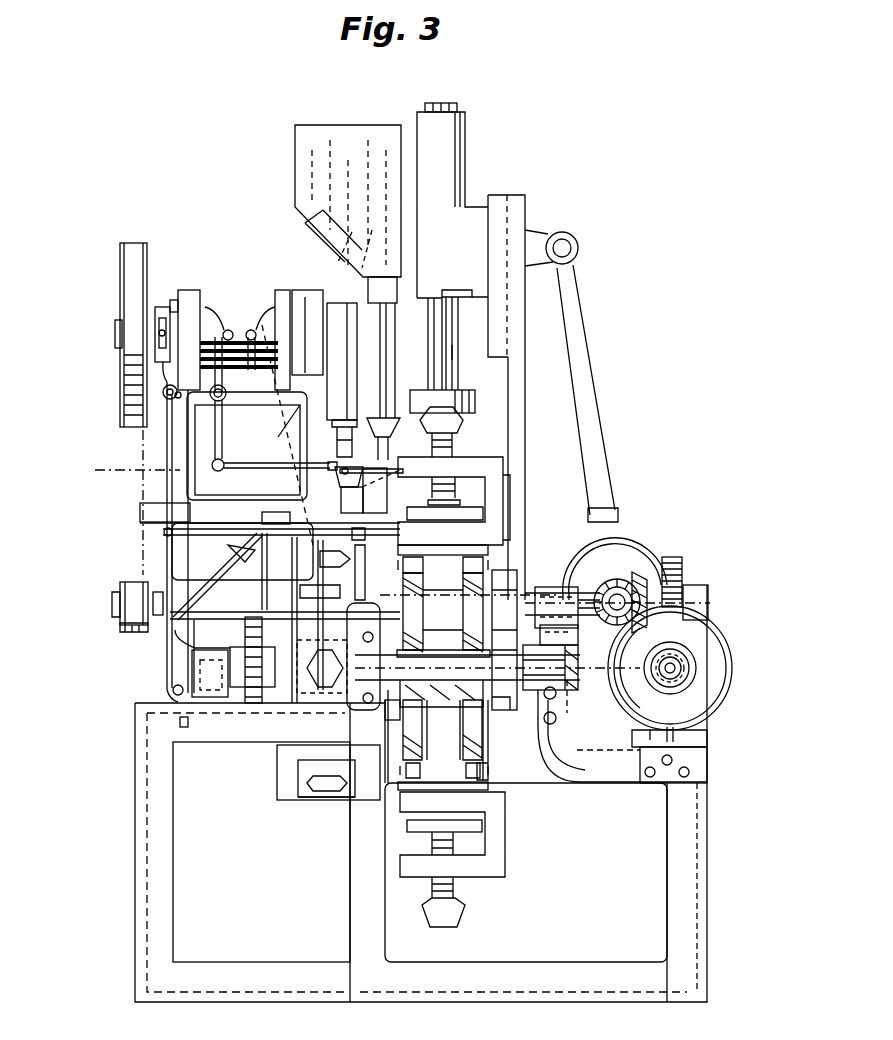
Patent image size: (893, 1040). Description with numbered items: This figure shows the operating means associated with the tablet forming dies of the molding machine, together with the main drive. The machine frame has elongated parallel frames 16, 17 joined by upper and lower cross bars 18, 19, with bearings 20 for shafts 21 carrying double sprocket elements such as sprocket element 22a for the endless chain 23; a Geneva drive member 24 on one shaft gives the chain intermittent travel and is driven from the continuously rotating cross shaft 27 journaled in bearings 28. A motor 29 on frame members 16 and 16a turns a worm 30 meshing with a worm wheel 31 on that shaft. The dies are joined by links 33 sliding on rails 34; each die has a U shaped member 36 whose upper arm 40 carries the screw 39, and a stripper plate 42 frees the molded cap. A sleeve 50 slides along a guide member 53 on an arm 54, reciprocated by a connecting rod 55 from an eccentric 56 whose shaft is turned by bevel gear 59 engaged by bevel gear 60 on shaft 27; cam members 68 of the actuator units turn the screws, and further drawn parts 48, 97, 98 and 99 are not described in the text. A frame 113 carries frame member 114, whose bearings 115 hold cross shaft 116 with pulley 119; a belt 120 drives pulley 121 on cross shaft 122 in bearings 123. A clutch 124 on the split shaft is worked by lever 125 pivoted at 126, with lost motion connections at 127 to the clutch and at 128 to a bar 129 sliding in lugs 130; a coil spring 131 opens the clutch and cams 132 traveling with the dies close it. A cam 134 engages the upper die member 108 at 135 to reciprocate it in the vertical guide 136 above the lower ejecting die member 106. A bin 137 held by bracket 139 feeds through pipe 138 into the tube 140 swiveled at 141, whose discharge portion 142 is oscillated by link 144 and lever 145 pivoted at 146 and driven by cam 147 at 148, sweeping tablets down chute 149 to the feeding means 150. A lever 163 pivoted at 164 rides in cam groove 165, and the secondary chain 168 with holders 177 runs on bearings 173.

The frame 16 is at (560, 745).
The frame member 16a is at (708, 820).
The frame 17 is at (348, 866).
The upper cross bar 18 is at (470, 623).
The lower cross bar 19 is at (560, 967).
The bearing 20 is at (392, 712).
The shaft 21 is at (446, 690).
The double sprocket element 22a is at (462, 750).
The endless chain 23 is at (499, 789).
The Geneva drive member 24 is at (503, 707).
The cross shaft 27 is at (580, 590).
The bearing 28 is at (552, 587).
The motor 29 is at (725, 655).
The worm 30 is at (686, 675).
The worm wheel 31 is at (678, 556).
The link 33 is at (462, 565).
The rail 34 is at (443, 612).
The U shaped member 36 is at (505, 488).
The screw 39 is at (455, 440).
The upper arm 40 is at (465, 470).
The plate 42 is at (470, 512).
The block 48 is at (455, 400).
The sleeve 50 is at (456, 150).
The guide member 53 is at (498, 333).
The arm 54 is at (518, 418).
The connecting rod 55 is at (597, 392).
The eccentric 56 is at (620, 512).
The bevel gear 59 is at (618, 580).
The bevel gear 60 is at (640, 572).
The cam member 68 is at (448, 342).
The pin 97 is at (173, 690).
The lug 98 is at (180, 713).
The gear 99 is at (240, 640).
The lower ejecting die member 106 is at (398, 470).
The upper die member 108 is at (338, 460).
The frame 113 is at (135, 815).
The frame member 114 is at (172, 495).
The bearing 115 is at (190, 585).
The cross shaft 116 is at (118, 610).
The pulley 119 is at (120, 585).
The belt 120 is at (100, 480).
The pulley 121 is at (125, 264).
The cross shaft 122 is at (115, 334).
The bearing 123 is at (189, 292).
The clutch 124 is at (173, 300).
The lever 125 is at (160, 376).
The pivot 126 is at (163, 393).
The lost motion connection 127 is at (155, 313).
The lost motion connection 128 is at (163, 534).
The bar 129 is at (210, 525).
The lug 130 is at (300, 543).
The coil spring 131 is at (170, 397).
The cam 132 is at (405, 533).
The cam 134 is at (310, 238).
The engagement point 135 is at (364, 250).
The vertical guide 136 is at (336, 325).
The bin 137 is at (314, 130).
The pipe 138 is at (452, 305).
The bracket 139 is at (338, 260).
The secondary hopper or tube 140 is at (452, 352).
The swivel 141 is at (450, 330).
The discharge portion 142 is at (375, 468).
The link 144 is at (266, 462).
The lever 145 is at (222, 437).
The pivot 146 is at (247, 446).
The cam 147 is at (218, 303).
The engagement point 148 is at (232, 332).
The chute 149 is at (388, 494).
The feeding means 150 is at (277, 512).
The lever 163 is at (306, 375).
The pivot 164 is at (264, 325).
The cam groove 165 is at (268, 303).
The secondary endless chain 168 is at (303, 810).
The bearing 173 is at (208, 722).
The article carrier or holder 177 is at (290, 796).